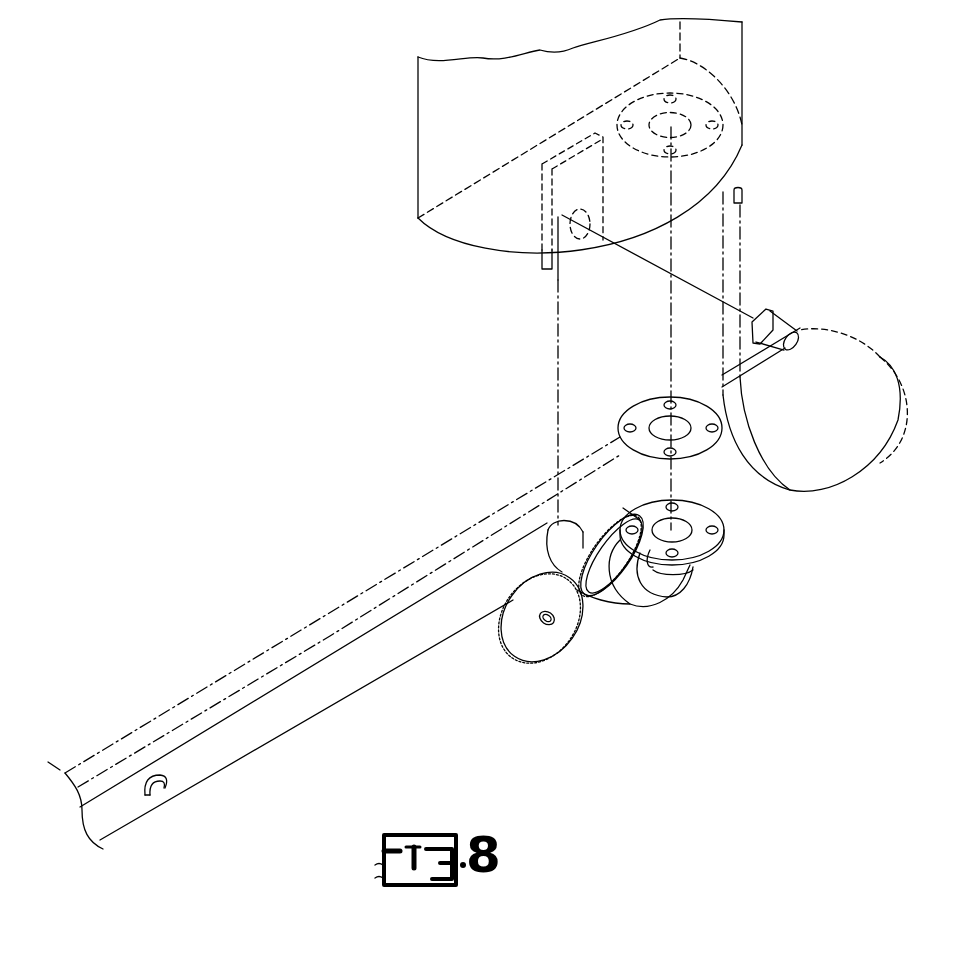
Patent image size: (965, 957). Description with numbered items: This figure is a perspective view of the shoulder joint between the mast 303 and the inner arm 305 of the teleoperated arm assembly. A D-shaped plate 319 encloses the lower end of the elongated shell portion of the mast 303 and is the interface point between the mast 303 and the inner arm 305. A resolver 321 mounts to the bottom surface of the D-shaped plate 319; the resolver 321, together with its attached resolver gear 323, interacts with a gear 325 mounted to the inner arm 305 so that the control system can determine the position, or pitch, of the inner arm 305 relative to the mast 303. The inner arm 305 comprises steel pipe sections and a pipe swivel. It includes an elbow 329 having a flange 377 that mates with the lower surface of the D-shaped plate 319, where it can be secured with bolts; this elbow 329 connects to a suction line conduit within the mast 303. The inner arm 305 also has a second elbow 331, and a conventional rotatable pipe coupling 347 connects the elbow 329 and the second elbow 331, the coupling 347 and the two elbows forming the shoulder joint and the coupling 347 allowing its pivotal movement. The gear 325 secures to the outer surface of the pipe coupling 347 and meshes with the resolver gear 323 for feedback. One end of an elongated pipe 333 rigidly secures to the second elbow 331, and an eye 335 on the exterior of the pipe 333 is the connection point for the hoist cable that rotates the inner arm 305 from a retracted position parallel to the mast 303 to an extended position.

The mast 303 is at (743, 53).
The D-shaped plate 319 is at (487, 248).
The resolver 321 is at (779, 330).
The flange 377 is at (712, 517).
The elbow 329 is at (677, 590).
The rotatable pipe coupling 347 is at (627, 605).
The gear 325 is at (585, 595).
The resolver gear 323 is at (548, 637).
The second elbow 331 is at (562, 530).
The inner arm 305 is at (408, 660).
The elongated pipe 333 is at (350, 653).
The eye 335 is at (155, 782).